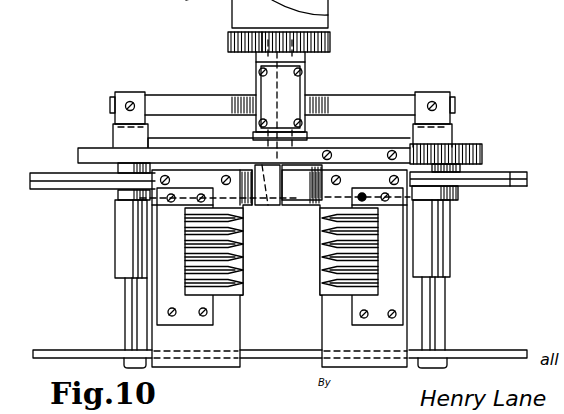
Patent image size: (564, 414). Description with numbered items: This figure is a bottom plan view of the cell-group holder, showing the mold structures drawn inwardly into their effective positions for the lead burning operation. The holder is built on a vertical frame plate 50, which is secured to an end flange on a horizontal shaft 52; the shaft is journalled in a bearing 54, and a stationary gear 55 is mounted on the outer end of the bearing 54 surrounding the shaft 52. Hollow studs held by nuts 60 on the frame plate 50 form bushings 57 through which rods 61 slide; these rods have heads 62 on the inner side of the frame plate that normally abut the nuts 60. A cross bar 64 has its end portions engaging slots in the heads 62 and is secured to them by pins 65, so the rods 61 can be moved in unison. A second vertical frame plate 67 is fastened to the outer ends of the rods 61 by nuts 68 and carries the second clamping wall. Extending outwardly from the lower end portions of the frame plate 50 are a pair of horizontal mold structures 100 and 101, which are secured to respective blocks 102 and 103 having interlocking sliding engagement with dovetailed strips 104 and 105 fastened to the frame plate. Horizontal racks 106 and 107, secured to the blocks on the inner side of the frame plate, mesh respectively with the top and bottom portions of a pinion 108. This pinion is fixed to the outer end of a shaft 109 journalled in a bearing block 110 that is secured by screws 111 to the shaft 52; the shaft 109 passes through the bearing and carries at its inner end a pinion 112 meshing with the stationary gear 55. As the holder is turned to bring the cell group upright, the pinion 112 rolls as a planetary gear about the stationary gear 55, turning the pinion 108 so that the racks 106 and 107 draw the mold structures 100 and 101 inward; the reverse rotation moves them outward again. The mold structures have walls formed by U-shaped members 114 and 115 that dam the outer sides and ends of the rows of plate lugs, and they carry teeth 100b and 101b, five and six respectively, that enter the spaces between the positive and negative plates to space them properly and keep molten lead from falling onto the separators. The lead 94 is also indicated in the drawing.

The vertical frame plate 50 is at (480, 180).
The horizontal shaft 52 is at (256, 64).
The bearing 54 is at (330, 14).
The stationary gear 55 is at (330, 42).
The bushings 57 is at (122, 250).
The nuts 60 is at (118, 168).
The rods 61 is at (132, 320).
The heads 62 is at (125, 92).
The cross bar 64 is at (282, 105).
The pins 65 is at (128, 106).
The vertical frame plate 67 is at (478, 350).
The nuts 68 is at (140, 362).
The lead 94 is at (186, 2).
The mold structure 100 is at (380, 366).
The teeth 100b is at (308, 248).
The mold structure 101 is at (208, 365).
The teeth 101b is at (243, 274).
The block 102 is at (283, 200).
The block 103 is at (284, 222).
The dovetailed strip 104 is at (492, 186).
The dovetailed strip 105 is at (68, 178).
The horizontal rack 106 is at (465, 148).
The horizontal rack 107 is at (88, 152).
The pinion 108 is at (305, 138).
The shaft 109 is at (290, 88).
The bearing block 110 is at (256, 82).
The screws 111 is at (284, 118).
The pinion 112 is at (230, 44).
The U-shaped member 114 is at (373, 323).
The U-shaped member 115 is at (193, 323).